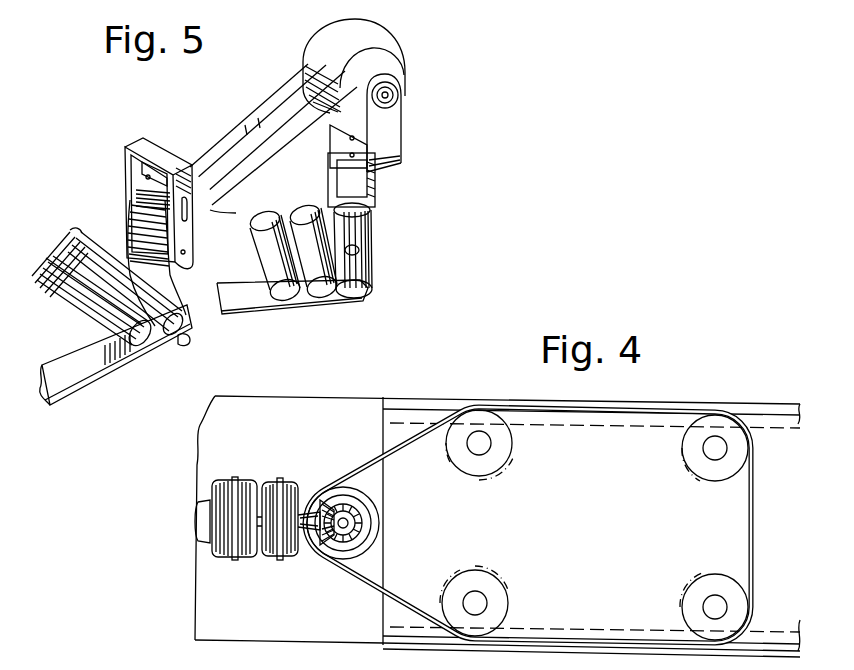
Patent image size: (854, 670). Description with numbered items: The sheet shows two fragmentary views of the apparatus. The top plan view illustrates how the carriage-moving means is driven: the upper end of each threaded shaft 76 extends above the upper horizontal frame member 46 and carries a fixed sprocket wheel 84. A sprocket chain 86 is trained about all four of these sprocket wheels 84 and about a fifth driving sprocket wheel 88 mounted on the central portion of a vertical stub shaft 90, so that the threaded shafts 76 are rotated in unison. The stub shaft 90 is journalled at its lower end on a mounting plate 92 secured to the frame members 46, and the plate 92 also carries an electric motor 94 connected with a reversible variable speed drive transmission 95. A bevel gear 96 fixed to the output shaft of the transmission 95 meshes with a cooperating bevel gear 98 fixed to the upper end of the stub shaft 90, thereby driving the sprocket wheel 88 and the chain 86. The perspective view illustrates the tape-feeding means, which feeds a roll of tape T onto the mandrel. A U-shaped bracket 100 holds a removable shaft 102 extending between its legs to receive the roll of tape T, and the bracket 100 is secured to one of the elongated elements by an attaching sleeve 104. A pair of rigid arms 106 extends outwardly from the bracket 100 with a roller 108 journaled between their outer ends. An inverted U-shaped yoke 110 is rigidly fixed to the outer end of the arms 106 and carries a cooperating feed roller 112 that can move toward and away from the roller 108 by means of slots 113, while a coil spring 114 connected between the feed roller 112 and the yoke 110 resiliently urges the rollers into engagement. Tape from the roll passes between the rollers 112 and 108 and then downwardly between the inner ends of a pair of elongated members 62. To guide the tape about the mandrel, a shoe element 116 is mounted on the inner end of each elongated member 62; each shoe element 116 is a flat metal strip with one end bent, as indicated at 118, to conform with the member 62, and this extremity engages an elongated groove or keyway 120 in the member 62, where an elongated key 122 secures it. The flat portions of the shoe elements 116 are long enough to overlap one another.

In FIG. 5, the roll of tape T is at (330, 42).
In FIG. 4, the upper horizontal frame member 46 is at (435, 400).
In FIG. 5, the elongated member 62 is at (62, 270).
In FIG. 4, the threaded shaft 76 is at (486, 443).
In FIG. 4, the sprocket wheel 84 is at (493, 467).
In FIG. 4, the sprocket chain 86 is at (383, 574).
In FIG. 4, the driving sprocket wheel 88 is at (370, 540).
In FIG. 4, the vertical stub shaft 90 is at (350, 521).
In FIG. 4, the mounting plate 92 is at (347, 640).
In FIG. 4, the electric motor 94 is at (244, 492).
In FIG. 4, the reversible variable speed drive transmission 95 is at (285, 494).
In FIG. 4, the bevel gear 96 is at (326, 538).
In FIG. 4, the cooperating bevel gear 98 is at (362, 526).
In FIG. 5, the U-shaped bracket 100 is at (389, 133).
In FIG. 5, the removable shaft 102 is at (399, 96).
In FIG. 5, the attaching sleeve 104 is at (355, 183).
In FIG. 5, the rigid arms 106 is at (306, 137).
In FIG. 5, the roller 108 is at (132, 222).
In FIG. 5, the inverted U-shaped yoke 110 is at (128, 150).
In FIG. 5, the feed roller 112 is at (138, 196).
In FIG. 5, the slots 113 is at (250, 207).
In FIG. 5, the coil spring 114 is at (143, 171).
In FIG. 5, the shoe element 116 is at (100, 370).
In FIG. 5, the bent end 118 is at (182, 339).
In FIG. 5, the elongated groove or keyway 120 is at (78, 310).
In FIG. 5, the elongated key 122 is at (95, 325).